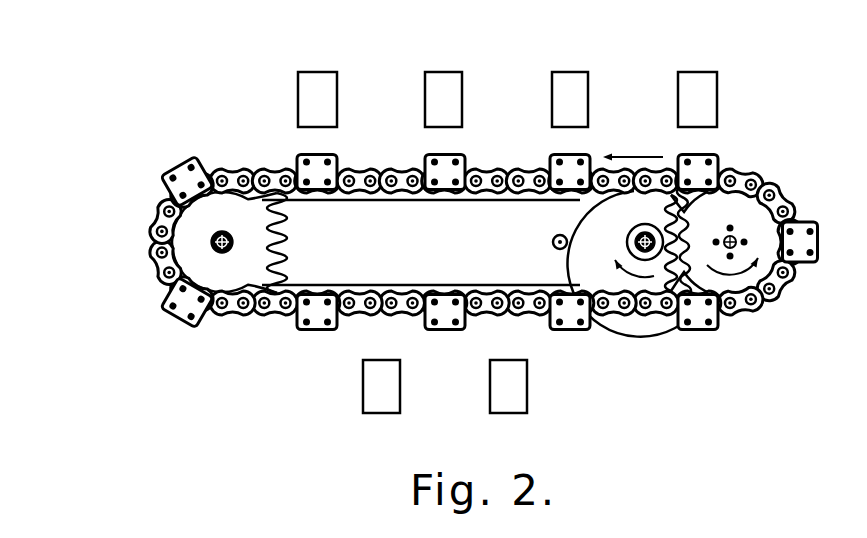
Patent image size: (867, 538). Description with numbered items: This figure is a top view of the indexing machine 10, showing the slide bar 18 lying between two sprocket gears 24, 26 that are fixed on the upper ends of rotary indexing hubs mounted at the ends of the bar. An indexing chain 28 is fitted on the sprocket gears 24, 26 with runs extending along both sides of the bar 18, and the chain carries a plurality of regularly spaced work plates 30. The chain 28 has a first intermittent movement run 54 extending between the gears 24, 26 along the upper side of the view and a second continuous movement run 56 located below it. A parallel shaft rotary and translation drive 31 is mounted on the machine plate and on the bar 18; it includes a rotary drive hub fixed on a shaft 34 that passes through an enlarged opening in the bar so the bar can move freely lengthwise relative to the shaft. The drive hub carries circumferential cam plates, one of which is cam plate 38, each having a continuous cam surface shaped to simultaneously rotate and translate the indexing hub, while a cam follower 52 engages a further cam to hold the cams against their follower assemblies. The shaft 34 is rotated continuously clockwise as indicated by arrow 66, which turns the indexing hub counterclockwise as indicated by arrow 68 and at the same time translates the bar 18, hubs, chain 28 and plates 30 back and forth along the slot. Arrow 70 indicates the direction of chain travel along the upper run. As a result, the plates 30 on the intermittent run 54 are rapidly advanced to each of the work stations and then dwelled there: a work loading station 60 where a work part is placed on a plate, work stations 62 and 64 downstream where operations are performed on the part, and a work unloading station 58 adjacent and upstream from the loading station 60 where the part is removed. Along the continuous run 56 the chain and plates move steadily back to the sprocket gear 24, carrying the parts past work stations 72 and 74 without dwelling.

The indexing machine 10 is at (94, 139).
The slide bar 18 is at (345, 258).
The sprocket gear 24 is at (745, 213).
The sprocket gear 26 is at (190, 249).
The indexing chain 28 is at (789, 280).
The work plates 30 is at (423, 158).
The parallel shaft rotary and translation drive 31 is at (574, 214).
The shaft 34 is at (654, 226).
The circumferential cam plate 38 is at (583, 280).
The cam follower 52 is at (553, 248).
The first intermittent movement run 54 is at (490, 160).
The second continuous movement run 56 is at (362, 322).
The work unloading station 58 is at (715, 72).
The work loading station 60 is at (567, 72).
The work station 62 is at (445, 72).
The work station 64 is at (315, 72).
The arrow 66 is at (597, 318).
The arrow 68 is at (747, 300).
The direction of travel arrow 70 is at (620, 156).
The work station 72 is at (400, 365).
The work station 74 is at (490, 398).